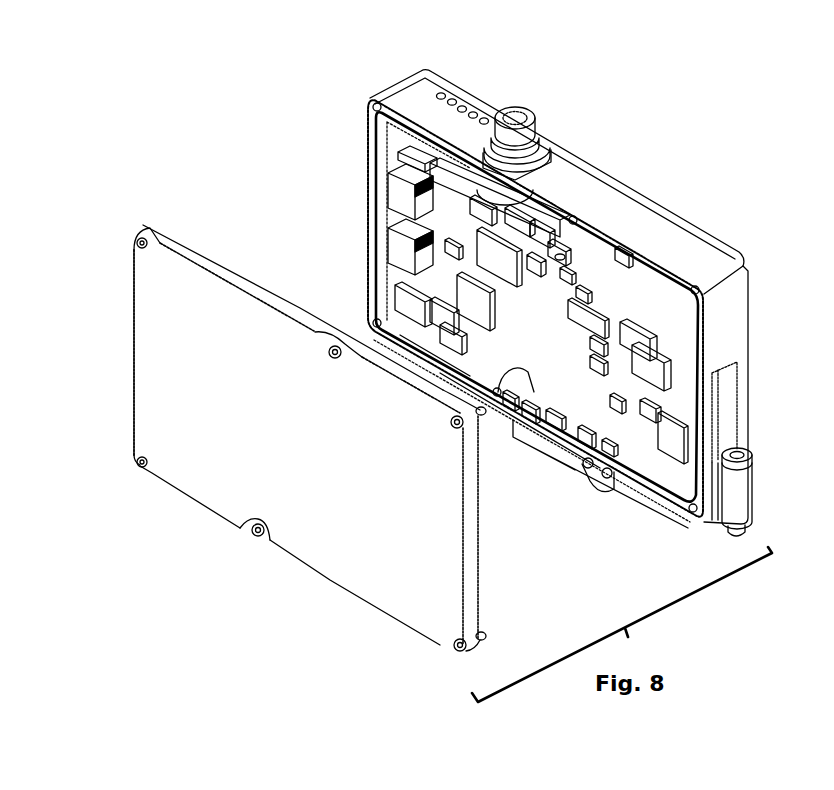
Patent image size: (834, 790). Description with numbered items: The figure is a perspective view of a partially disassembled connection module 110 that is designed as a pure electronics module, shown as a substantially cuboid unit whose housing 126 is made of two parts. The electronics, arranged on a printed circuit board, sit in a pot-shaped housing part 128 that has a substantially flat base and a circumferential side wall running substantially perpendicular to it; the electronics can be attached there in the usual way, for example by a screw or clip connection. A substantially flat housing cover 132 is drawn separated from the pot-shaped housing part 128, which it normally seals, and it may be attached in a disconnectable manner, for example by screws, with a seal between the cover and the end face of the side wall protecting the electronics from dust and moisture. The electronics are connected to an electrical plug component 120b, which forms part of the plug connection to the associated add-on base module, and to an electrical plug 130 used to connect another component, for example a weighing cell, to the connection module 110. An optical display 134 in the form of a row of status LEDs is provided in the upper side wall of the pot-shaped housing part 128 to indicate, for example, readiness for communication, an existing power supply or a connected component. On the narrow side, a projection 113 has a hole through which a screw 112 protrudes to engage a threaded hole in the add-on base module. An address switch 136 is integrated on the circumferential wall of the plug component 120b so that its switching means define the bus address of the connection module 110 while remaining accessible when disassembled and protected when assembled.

The connection module 110 is at (594, 297).
The screw 112 is at (742, 459).
The projection 113 is at (733, 497).
The electrical plug component 120b is at (567, 453).
The housing 126 is at (674, 206).
The pot-shaped housing part 128 is at (732, 325).
The electrical plug 130 is at (518, 110).
The housing cover 132 is at (152, 358).
The optical display 134 is at (470, 101).
The address switch 136 is at (594, 476).